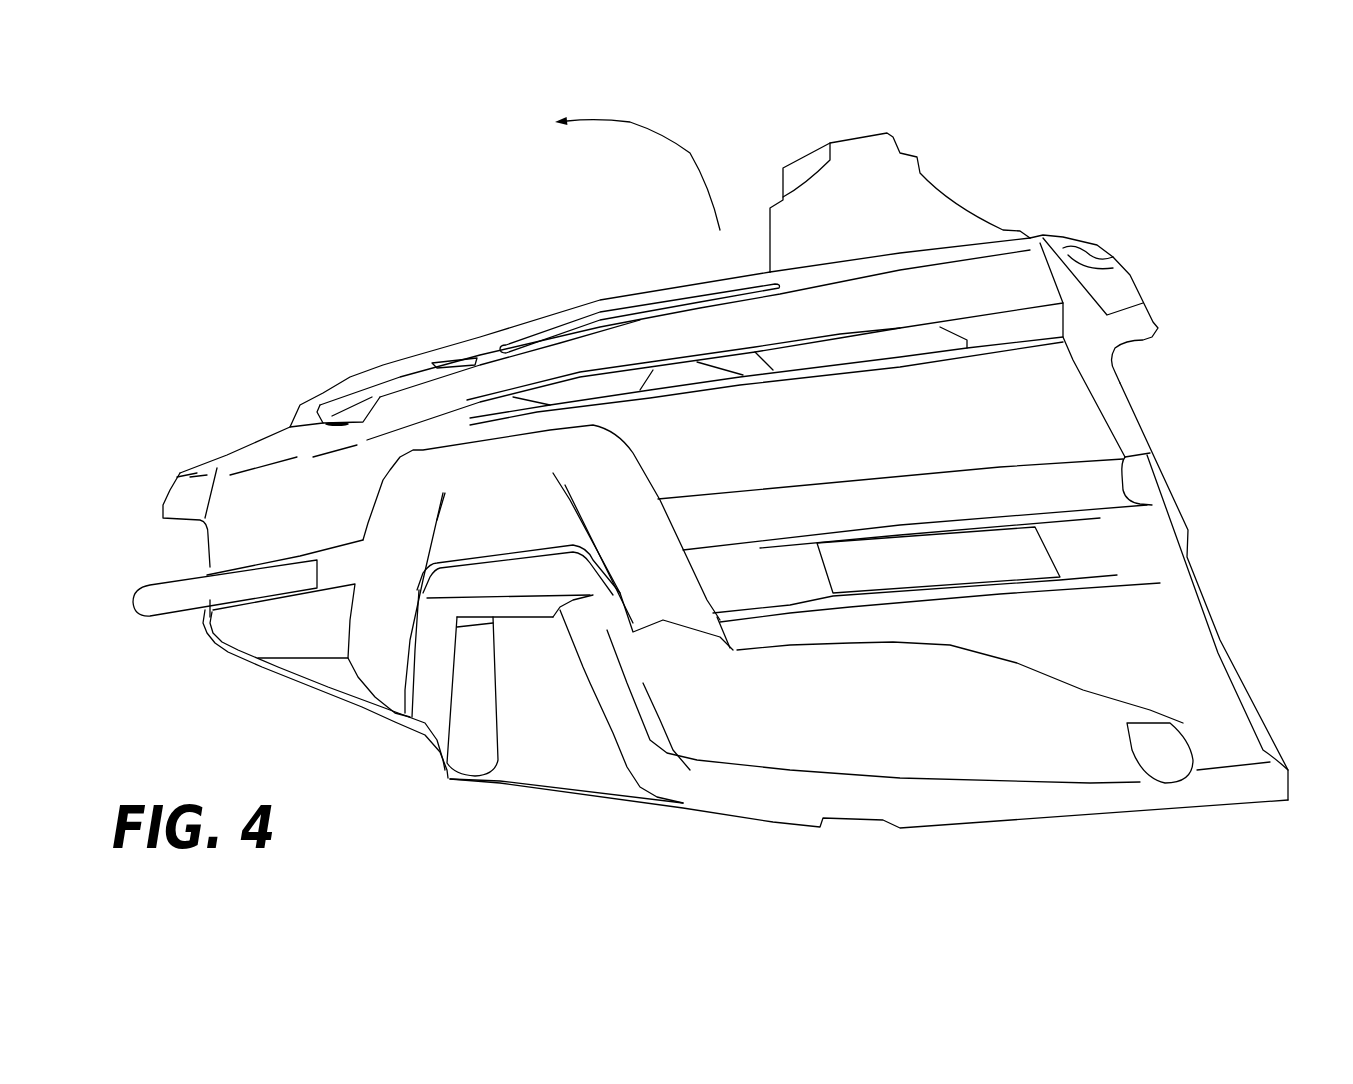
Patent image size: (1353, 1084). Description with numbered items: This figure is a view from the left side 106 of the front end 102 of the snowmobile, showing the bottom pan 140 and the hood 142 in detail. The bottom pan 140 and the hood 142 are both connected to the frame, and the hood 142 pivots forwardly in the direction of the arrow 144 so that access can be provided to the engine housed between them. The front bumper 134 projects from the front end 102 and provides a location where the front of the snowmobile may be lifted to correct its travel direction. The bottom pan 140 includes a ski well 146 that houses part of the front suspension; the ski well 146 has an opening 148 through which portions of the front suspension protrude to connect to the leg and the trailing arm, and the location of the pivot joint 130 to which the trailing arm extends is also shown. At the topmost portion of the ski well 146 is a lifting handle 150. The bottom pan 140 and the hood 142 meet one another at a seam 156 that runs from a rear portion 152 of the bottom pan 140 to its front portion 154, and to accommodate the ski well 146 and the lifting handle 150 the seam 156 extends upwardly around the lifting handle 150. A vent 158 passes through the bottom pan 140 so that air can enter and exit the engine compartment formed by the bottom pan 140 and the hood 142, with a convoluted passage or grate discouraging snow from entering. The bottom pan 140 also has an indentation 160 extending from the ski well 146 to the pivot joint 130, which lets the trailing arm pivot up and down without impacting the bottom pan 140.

The front end 102 is at (160, 547).
The left side 106 is at (1000, 849).
The pivot joint 130 is at (1163, 757).
The front bumper 134 is at (138, 605).
The bottom pan 140 is at (1207, 690).
The hood 142 is at (483, 340).
The arrow 144 is at (672, 140).
The ski well 146 is at (529, 813).
The opening 148 is at (473, 727).
The lifting handle 150 is at (506, 575).
The rear portion 152 is at (1200, 600).
The front portion 154 is at (220, 643).
The seam 156 is at (907, 478).
The vent 158 is at (958, 576).
The indentation 160 is at (773, 723).